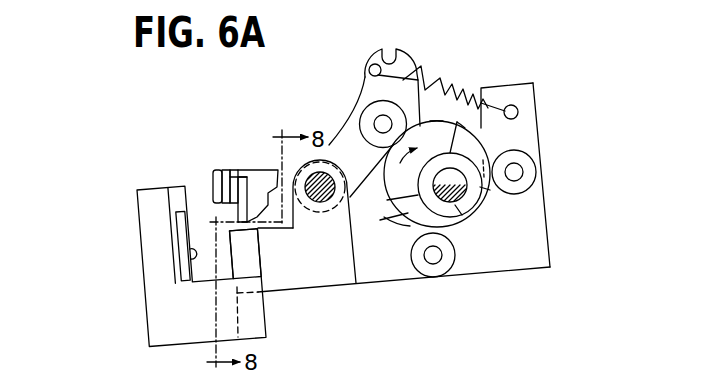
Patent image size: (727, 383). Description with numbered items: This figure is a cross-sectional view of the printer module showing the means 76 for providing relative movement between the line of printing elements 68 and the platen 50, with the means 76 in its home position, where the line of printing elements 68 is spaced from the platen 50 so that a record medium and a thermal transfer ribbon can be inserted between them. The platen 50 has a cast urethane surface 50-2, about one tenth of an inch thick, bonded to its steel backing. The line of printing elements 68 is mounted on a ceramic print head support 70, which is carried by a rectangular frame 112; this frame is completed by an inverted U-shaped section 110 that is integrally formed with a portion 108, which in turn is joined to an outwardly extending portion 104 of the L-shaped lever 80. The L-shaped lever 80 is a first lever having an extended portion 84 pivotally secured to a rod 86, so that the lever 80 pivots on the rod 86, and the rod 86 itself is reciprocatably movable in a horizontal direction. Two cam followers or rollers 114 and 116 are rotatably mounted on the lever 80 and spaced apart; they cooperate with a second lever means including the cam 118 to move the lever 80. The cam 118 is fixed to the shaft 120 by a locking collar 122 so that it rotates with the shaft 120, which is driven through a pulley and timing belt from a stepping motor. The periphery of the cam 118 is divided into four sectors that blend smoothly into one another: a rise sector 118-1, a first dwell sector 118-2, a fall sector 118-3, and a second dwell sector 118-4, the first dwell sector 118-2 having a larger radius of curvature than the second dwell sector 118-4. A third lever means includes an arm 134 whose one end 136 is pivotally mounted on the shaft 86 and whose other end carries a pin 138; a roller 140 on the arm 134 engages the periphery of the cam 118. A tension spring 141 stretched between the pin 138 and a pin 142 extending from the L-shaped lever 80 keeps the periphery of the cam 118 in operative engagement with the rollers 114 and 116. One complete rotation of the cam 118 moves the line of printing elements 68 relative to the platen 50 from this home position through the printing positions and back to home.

The platen 50 is at (222, 166).
The cast urethane surface 50-2 is at (193, 185).
The line of printing elements 68 is at (196, 193).
The ceramic print head support 70 is at (173, 255).
The means for providing relative movement 76 is at (378, 293).
The L-shaped lever 80 is at (530, 250).
The extended portion 84 is at (343, 212).
The rod 86 is at (306, 182).
The outwardly extending portion 104 is at (250, 245).
The portion 108 is at (175, 328).
The inverted U-shaped section 110 is at (147, 227).
The rectangular frame 112 is at (148, 200).
The cam follower roller 114 is at (525, 159).
The cam follower roller 116 is at (437, 271).
The cam 118 is at (474, 133).
The rise sector 118-1 is at (481, 128).
The first dwell sector 118-2 is at (427, 118).
The fall sector 118-3 is at (408, 214).
The second dwell sector 118-4 is at (480, 203).
The shaft 120 is at (453, 197).
The locking collar 122 is at (457, 217).
The arm 134 is at (362, 74).
The end of arm 136 is at (333, 143).
The pin 138 is at (366, 63).
The roller 140 is at (366, 108).
The tension spring 141 is at (448, 116).
The pin 142 is at (518, 108).